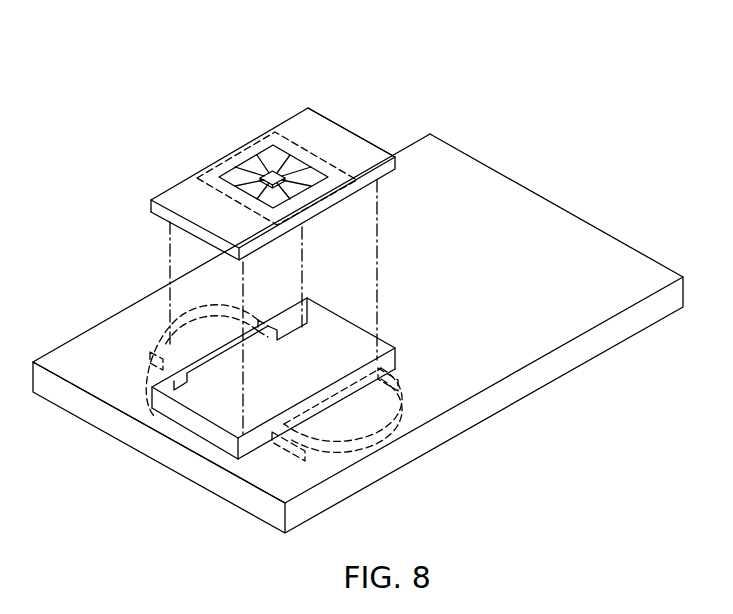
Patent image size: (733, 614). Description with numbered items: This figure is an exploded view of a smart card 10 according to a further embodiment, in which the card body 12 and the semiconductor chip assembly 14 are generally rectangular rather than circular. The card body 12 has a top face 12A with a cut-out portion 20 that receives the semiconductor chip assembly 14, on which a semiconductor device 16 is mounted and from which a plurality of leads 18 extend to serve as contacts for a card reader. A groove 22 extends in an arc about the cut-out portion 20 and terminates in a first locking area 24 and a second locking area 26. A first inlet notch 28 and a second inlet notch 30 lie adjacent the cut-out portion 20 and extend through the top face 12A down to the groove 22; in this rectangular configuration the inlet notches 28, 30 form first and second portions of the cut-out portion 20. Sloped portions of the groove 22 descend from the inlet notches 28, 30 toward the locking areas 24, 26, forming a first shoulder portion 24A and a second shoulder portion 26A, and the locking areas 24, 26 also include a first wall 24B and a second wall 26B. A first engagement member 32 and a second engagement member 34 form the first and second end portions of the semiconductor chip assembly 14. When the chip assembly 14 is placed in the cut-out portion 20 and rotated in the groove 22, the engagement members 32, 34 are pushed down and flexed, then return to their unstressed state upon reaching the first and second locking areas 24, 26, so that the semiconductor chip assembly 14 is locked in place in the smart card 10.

The smart card 10 is at (505, 117).
The card body 12 is at (640, 263).
The top face of the card body 12A is at (553, 213).
The semiconductor chip assembly 14 is at (215, 171).
The semiconductor device 16 is at (258, 150).
The leads 18 is at (271, 172).
The cut-out portion 20 is at (176, 414).
The groove 22 is at (185, 383).
The first locking area 24 is at (202, 312).
The first shoulder portion 24A is at (158, 350).
The first wall 24B is at (253, 313).
The second locking area 26 is at (363, 430).
The second shoulder portion 26A is at (388, 367).
The second wall 26B is at (287, 415).
The first inlet notch 28 is at (230, 420).
The second inlet notch 30 is at (310, 347).
The first engagement member 32 is at (163, 197).
The second engagement member 34 is at (318, 131).